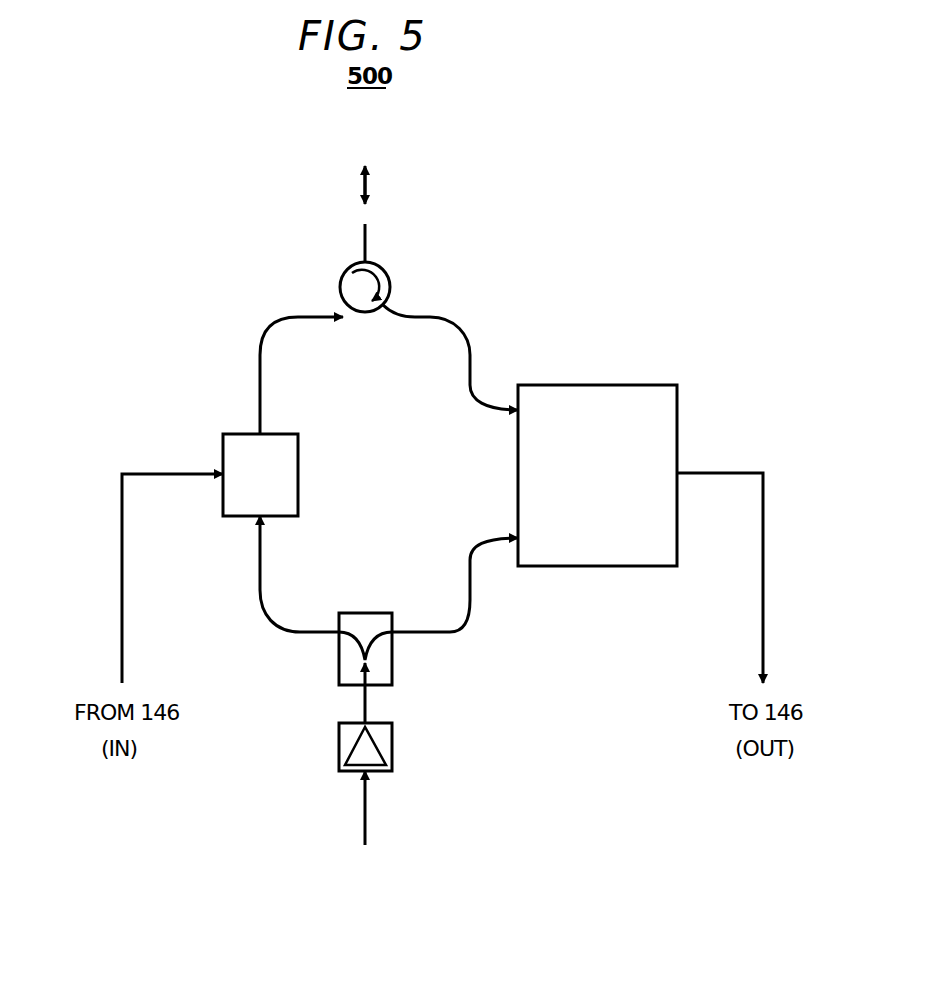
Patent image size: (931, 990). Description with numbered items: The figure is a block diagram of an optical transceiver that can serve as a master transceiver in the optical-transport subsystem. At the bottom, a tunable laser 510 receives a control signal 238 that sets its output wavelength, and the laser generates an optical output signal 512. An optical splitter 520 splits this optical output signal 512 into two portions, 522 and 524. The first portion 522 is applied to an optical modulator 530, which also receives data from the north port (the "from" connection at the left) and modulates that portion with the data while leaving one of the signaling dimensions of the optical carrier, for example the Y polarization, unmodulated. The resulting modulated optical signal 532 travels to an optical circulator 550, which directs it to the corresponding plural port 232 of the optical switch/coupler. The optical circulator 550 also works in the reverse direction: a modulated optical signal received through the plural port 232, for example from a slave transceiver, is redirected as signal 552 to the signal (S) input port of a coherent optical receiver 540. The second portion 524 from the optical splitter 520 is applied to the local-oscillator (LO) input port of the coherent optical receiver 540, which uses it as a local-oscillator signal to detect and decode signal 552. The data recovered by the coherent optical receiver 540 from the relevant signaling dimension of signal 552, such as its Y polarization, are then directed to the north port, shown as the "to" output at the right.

The plural port 232 is at (367, 236).
The optical circulator 550 is at (390, 290).
The modulated optical signal 532 is at (284, 326).
The redirected optical signal 552 is at (470, 352).
The optical modulator 530 is at (298, 476).
The coherent optical receiver 540 is at (620, 385).
The optical splitter 520 is at (366, 613).
The portion 522 is at (262, 610).
The portion 524 is at (470, 600).
The optical output signal 512 is at (367, 706).
The tunable laser 510 is at (392, 750).
The control signal 238 is at (367, 818).